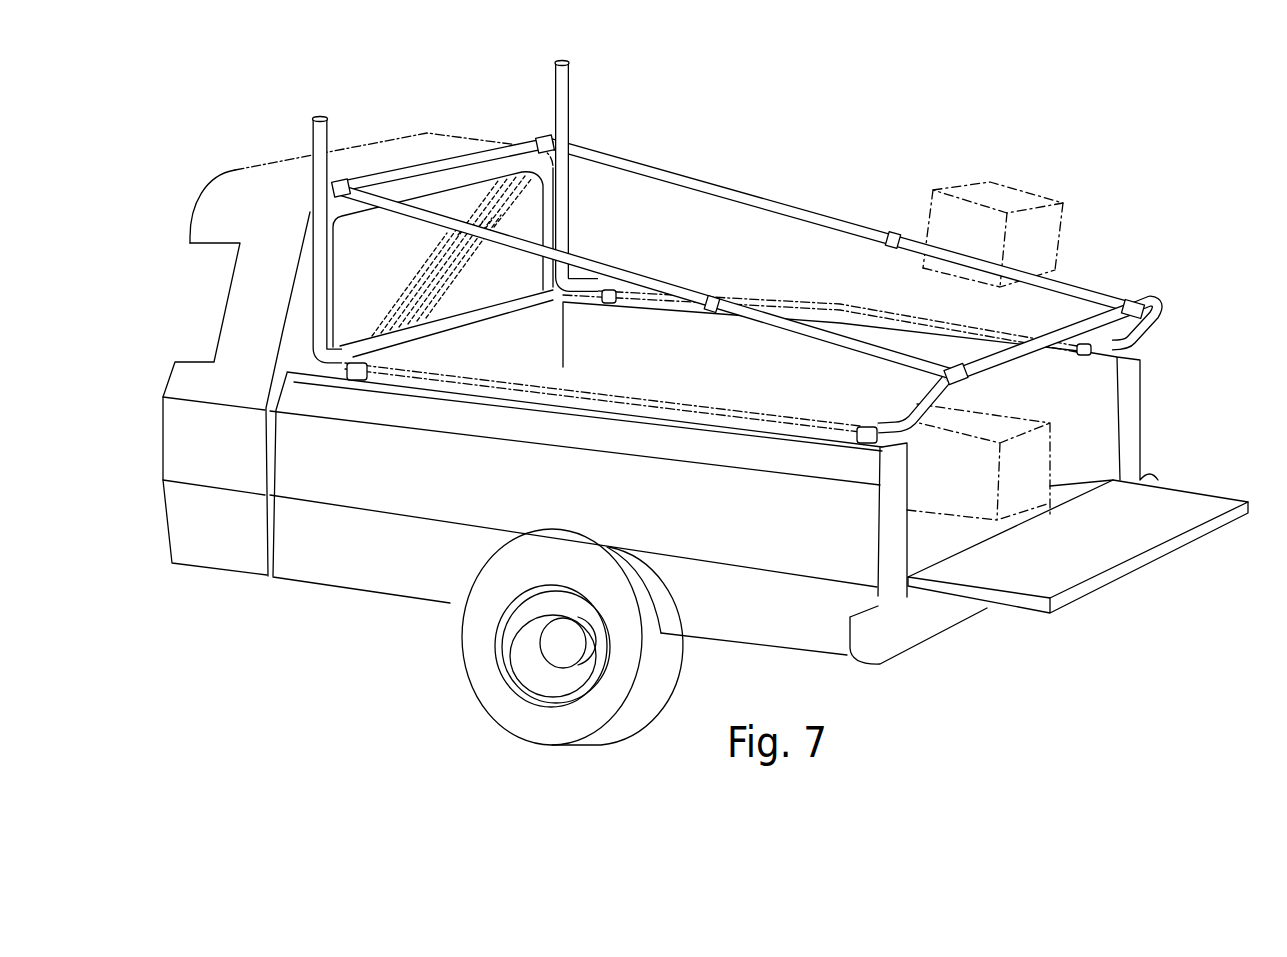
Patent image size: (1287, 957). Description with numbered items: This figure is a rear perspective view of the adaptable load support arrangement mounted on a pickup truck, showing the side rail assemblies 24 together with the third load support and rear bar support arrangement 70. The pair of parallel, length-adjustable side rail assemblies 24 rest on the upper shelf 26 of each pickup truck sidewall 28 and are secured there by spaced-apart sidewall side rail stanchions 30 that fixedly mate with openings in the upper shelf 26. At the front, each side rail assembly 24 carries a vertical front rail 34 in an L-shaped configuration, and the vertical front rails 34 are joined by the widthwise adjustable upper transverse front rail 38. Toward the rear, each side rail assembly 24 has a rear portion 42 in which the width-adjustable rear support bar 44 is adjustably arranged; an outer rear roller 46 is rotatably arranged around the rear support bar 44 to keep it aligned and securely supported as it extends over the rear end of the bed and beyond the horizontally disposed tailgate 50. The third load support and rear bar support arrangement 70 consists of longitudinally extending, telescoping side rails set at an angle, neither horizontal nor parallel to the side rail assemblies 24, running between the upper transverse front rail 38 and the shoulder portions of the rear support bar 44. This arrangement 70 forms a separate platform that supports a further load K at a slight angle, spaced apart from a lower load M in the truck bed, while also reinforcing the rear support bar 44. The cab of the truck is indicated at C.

The side rail assembly 24 is at (790, 302).
The upper shelf 26 is at (647, 303).
The pickup truck sidewall 28 is at (437, 507).
The sidewall side rail stanchion 30 is at (352, 376).
The vertical front rail 34 is at (318, 198).
The upper transverse front rail 38 is at (408, 170).
The rear portion 42 is at (848, 420).
The adjustable rear support bar 44 is at (1152, 296).
The outer rear roller 46 is at (1027, 363).
The tailgate 50 is at (1133, 563).
The third load support and rear bar support arrangement 70 is at (633, 155).
The cab C is at (268, 172).
The load K is at (1063, 222).
The load M is at (1050, 467).